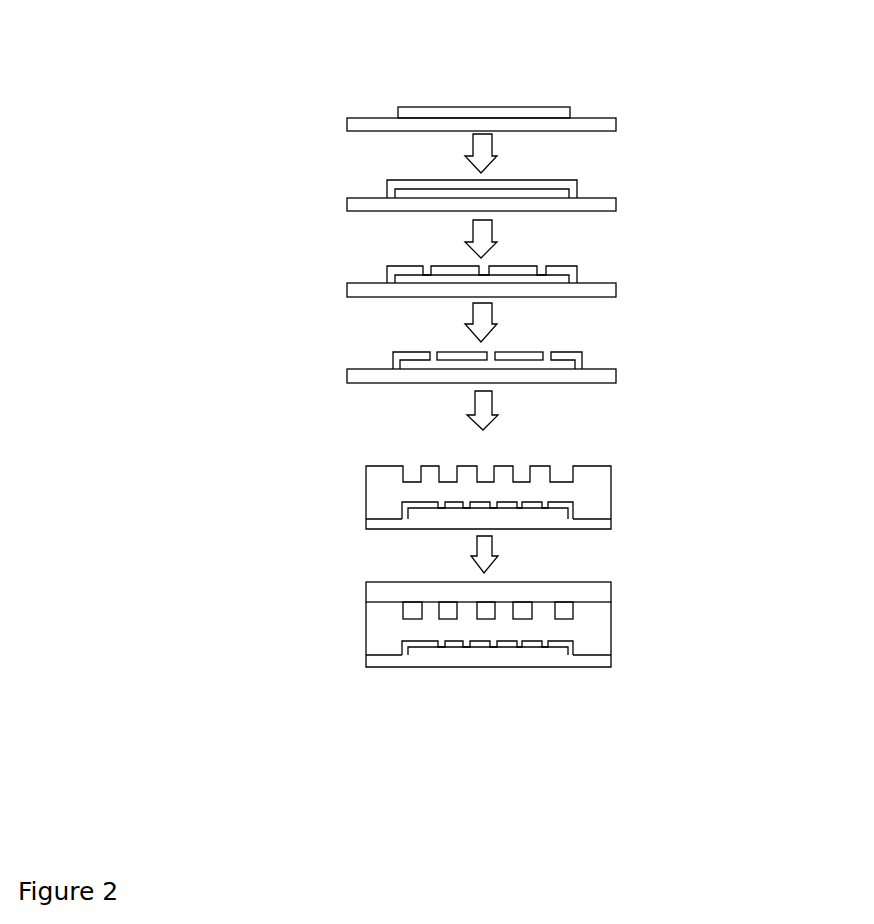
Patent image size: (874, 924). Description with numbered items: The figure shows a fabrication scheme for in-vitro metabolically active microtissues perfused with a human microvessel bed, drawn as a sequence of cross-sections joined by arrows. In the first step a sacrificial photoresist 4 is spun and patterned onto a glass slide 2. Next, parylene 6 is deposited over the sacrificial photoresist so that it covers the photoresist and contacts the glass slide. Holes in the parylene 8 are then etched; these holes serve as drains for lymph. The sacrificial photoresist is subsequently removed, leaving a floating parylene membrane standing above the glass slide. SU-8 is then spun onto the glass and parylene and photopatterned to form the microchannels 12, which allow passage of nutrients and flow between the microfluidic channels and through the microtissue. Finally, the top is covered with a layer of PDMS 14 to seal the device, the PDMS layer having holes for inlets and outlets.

The glass slide 2 is at (612, 122).
The sacrificial photoresist 4 is at (535, 104).
The parylene 6 is at (540, 178).
The holes in parylene 8 is at (550, 276).
The microchannels 12 is at (619, 492).
The layer of PDMS 14 is at (618, 590).